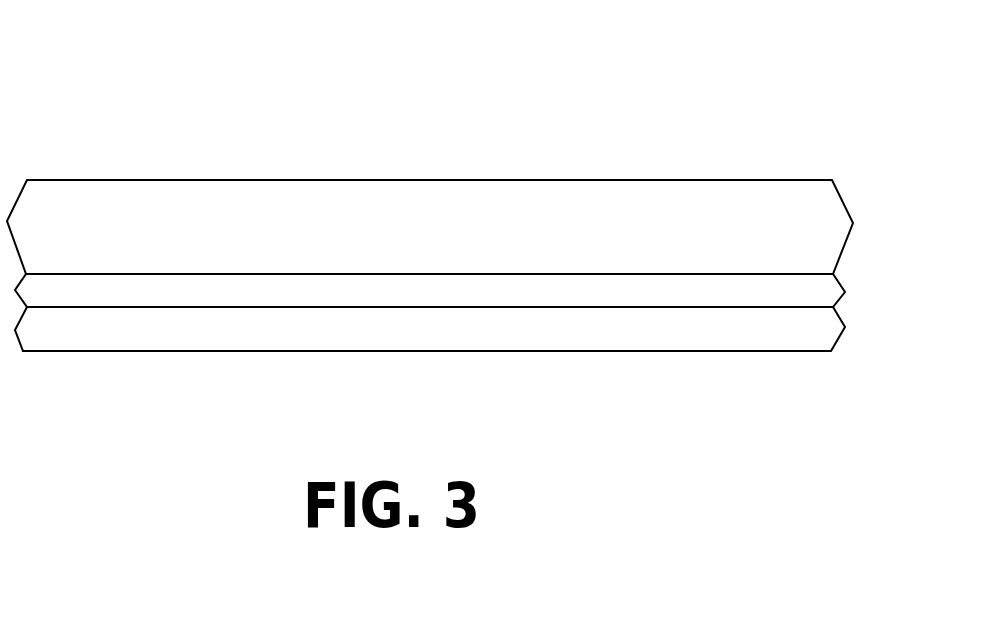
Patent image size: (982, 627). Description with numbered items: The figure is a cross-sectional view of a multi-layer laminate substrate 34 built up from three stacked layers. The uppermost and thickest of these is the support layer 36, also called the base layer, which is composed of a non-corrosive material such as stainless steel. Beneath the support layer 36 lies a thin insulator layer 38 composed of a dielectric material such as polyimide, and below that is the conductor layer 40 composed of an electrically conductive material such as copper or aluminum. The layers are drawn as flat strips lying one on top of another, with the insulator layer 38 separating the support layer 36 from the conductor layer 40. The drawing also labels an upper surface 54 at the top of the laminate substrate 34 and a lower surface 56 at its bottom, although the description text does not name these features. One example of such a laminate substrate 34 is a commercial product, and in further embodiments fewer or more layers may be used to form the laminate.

The multi-layer laminate substrate 34 is at (112, 86).
The support layer 36 is at (490, 205).
The insulator layer 38 is at (805, 297).
The conductor layer 40 is at (783, 326).
The top surface 54 is at (360, 178).
The bottom surface 56 is at (543, 352).